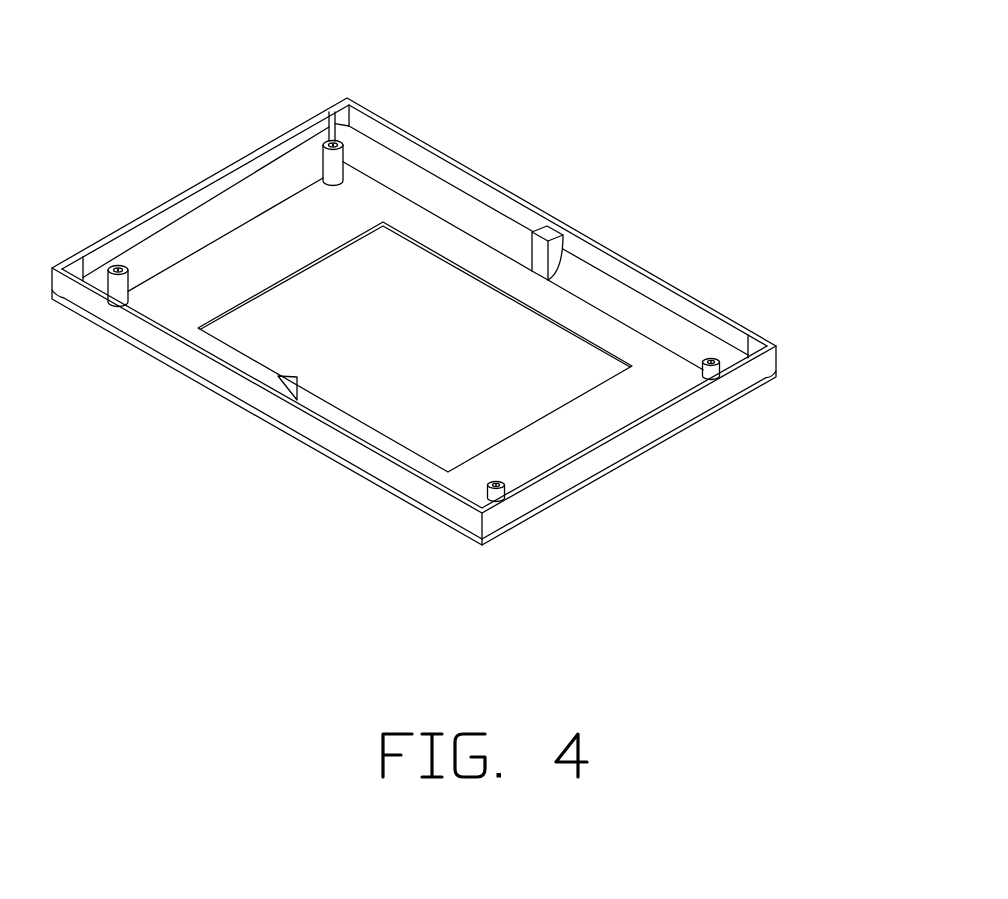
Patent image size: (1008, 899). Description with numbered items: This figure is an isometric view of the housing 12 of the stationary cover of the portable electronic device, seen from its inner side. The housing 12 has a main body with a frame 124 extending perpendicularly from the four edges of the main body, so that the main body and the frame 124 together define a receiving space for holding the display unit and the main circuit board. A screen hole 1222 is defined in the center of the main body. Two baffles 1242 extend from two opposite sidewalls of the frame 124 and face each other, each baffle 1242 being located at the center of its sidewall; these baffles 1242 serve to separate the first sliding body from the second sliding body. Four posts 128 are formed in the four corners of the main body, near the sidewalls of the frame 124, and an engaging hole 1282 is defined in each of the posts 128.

The housing 12 is at (469, 284).
The frame 124 is at (414, 237).
The baffle 1242 is at (612, 232).
The post 128 is at (469, 329).
The engaging hole 1282 is at (795, 314).
The screen hole 1222 is at (466, 391).